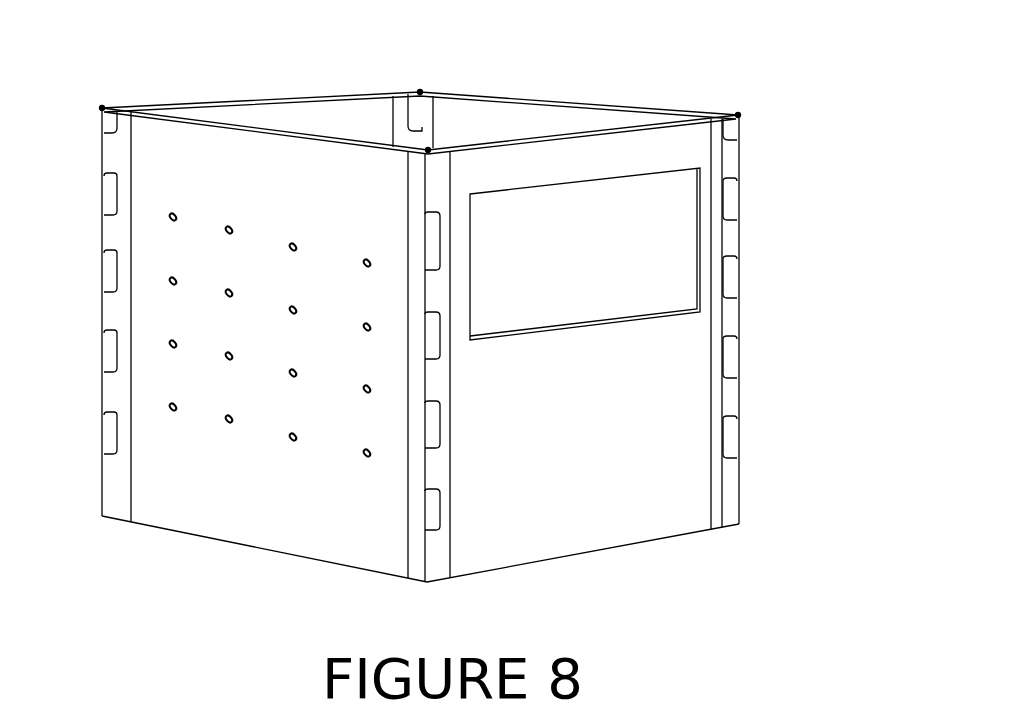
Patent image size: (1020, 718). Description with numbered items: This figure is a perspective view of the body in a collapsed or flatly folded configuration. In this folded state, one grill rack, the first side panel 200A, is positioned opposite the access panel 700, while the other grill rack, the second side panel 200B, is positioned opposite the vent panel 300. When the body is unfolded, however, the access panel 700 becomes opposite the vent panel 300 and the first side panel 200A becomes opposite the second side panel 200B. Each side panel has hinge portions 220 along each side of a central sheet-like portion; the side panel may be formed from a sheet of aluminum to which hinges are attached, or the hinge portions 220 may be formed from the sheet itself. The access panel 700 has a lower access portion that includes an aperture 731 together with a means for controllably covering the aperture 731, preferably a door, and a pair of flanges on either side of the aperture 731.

The vent panel 300 is at (292, 97).
The hinge portions 220 is at (423, 90).
The first side panel 200A is at (562, 102).
The second side panel 200B is at (333, 141).
The aperture 731 is at (663, 230).
The access panel 700 is at (545, 518).